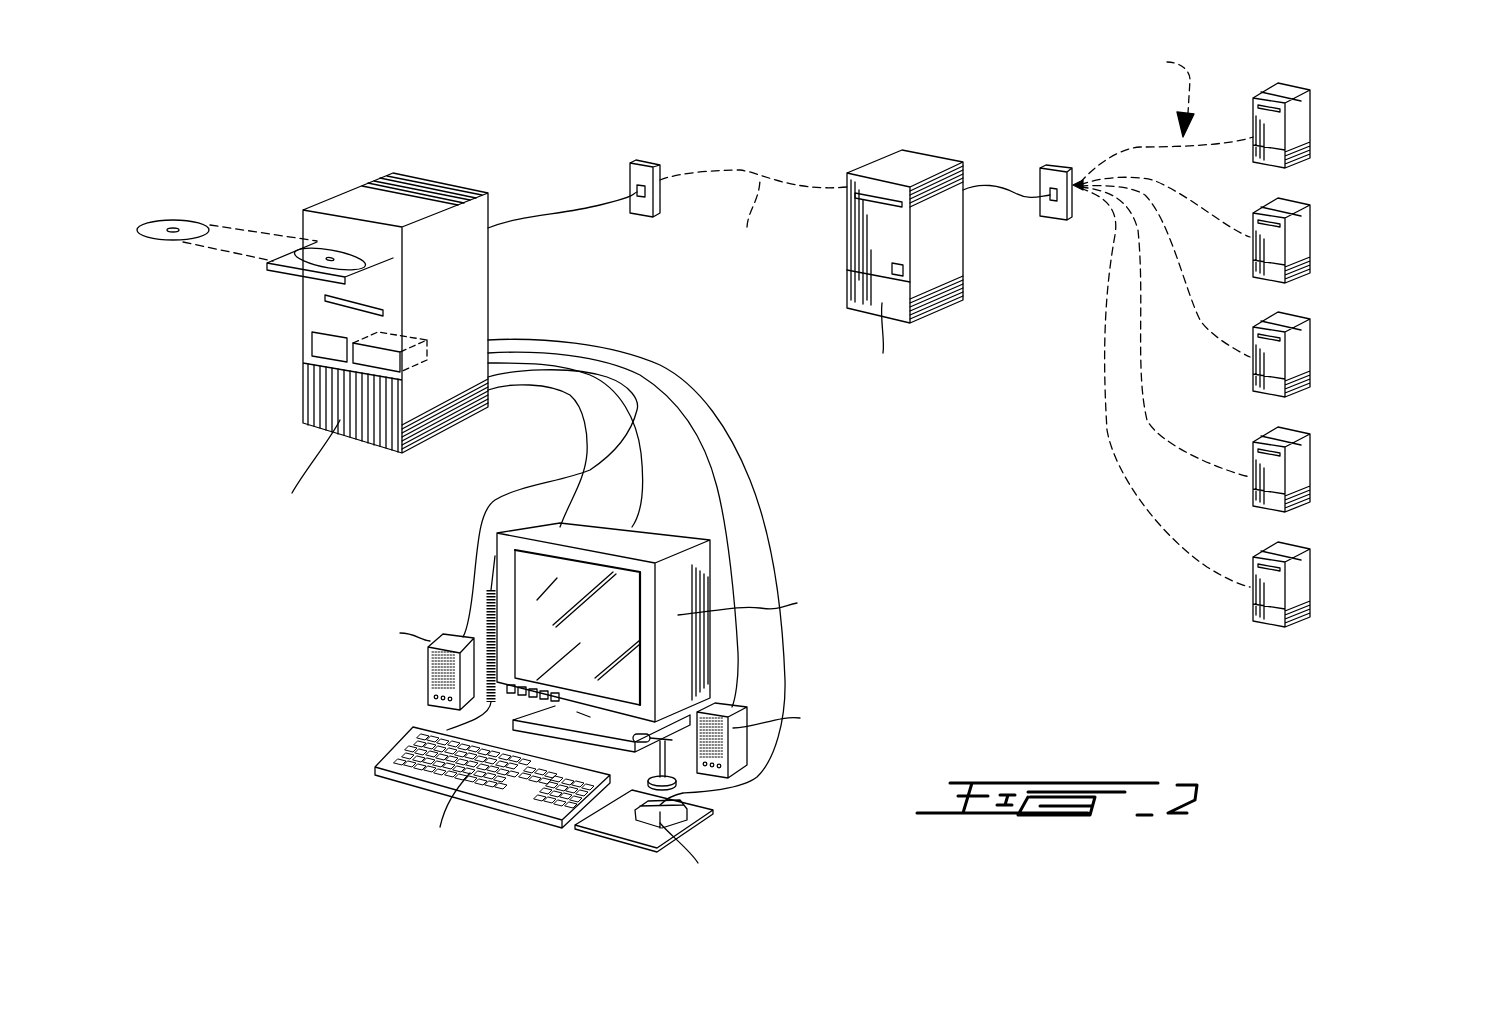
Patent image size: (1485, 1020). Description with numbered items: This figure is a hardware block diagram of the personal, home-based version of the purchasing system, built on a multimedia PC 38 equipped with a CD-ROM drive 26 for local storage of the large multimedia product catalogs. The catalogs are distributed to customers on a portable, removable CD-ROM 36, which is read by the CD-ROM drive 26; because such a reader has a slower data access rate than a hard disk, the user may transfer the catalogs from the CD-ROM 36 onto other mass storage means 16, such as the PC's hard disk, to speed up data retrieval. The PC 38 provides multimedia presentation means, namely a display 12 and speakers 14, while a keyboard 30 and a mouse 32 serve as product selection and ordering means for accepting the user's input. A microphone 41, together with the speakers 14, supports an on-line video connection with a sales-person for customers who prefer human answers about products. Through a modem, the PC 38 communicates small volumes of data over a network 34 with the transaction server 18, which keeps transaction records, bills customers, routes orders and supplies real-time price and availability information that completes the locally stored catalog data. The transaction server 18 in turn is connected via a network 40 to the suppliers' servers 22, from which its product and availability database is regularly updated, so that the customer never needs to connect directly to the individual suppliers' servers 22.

The display 12 is at (540, 617).
The speaker 14 is at (432, 683).
The mass storage means 16 is at (390, 360).
The transaction server 18 is at (915, 168).
The suppliers' servers 22 is at (1258, 213).
The CD-ROM drive 26 is at (352, 252).
The keyboard 30 is at (415, 740).
The mouse 32 is at (672, 813).
The network 34 is at (740, 170).
The CD-ROM 36 is at (197, 229).
The PC 38 is at (460, 188).
The network 40 is at (1140, 147).
The microphone 41 is at (663, 767).